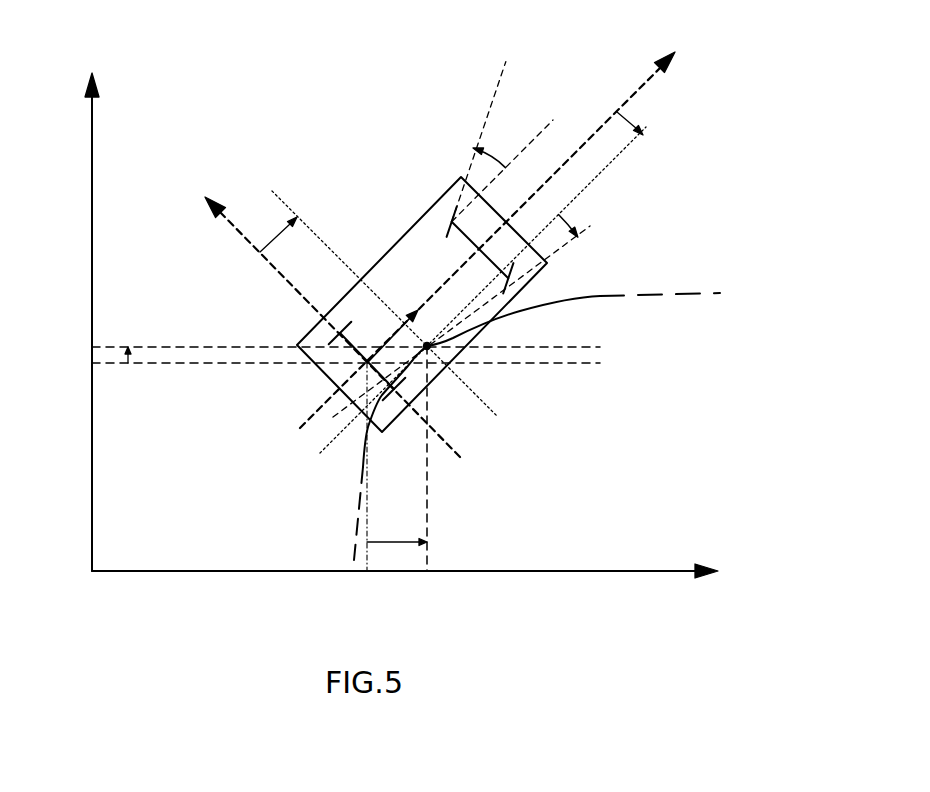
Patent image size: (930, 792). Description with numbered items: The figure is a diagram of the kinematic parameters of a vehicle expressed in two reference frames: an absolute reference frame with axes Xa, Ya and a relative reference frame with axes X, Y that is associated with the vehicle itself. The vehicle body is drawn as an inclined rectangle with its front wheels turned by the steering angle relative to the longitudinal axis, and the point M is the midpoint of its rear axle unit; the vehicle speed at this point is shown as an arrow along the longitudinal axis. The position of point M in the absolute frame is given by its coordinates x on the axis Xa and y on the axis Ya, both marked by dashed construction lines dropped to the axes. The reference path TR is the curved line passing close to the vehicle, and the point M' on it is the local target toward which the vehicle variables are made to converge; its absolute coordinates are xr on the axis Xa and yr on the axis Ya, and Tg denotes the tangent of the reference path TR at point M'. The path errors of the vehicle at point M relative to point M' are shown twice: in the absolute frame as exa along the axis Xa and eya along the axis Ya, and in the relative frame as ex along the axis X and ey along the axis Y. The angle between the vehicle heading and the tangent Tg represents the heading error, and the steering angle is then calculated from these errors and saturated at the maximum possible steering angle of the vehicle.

The y axis of the absolute reference frame Ya is at (71, 316).
The x axis of the absolute reference frame Xa is at (411, 589).
The position of point M' on the axis Ya yr is at (335, 346).
The position of point M on the axis Ya y is at (335, 367).
The position of point M' on the axis Xa xr is at (429, 473).
The position of point M on the axis Xa x is at (368, 479).
The path error on the axis Ya eya is at (143, 341).
The path error on the axis Xa exa is at (397, 525).
The midpoint of the rear axle unit M is at (326, 369).
The point of the reference path M' is at (480, 372).
The X axis of the relative reference frame X is at (487, 234).
The Y axis of the relative reference frame Y is at (314, 327).
The path error on the axis X ex is at (637, 117).
The path error on the axis Y ey is at (276, 234).
The tangent of the reference path Tg is at (563, 247).
The reference path TR is at (674, 297).